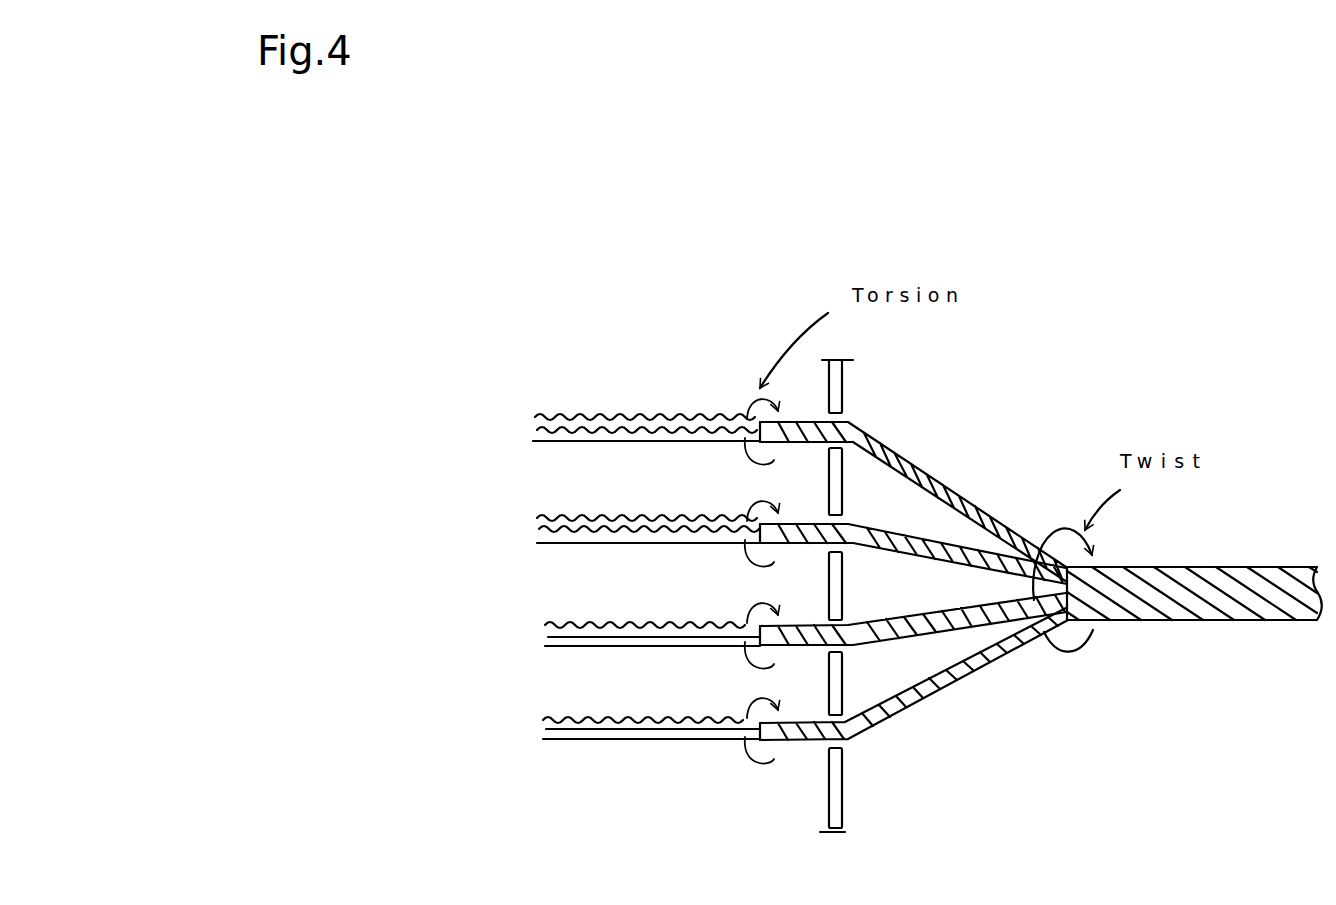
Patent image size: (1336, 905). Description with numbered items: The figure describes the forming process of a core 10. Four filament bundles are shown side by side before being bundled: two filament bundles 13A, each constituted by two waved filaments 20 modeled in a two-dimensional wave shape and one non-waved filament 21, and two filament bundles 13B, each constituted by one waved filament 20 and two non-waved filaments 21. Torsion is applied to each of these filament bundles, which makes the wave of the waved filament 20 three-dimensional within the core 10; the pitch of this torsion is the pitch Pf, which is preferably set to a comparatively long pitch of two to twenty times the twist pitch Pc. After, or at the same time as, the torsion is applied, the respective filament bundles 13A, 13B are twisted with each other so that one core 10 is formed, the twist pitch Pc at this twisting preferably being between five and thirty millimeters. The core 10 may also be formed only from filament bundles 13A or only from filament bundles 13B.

The core 10 is at (1228, 547).
The filament bundle 13A is at (522, 431).
The filament bundle 13B is at (518, 632).
The waved filament 20 is at (536, 818).
The non-waved filament 21 is at (623, 441).
The pitch of the torsion Pf is at (748, 407).
The twist pitch Pc is at (1053, 553).